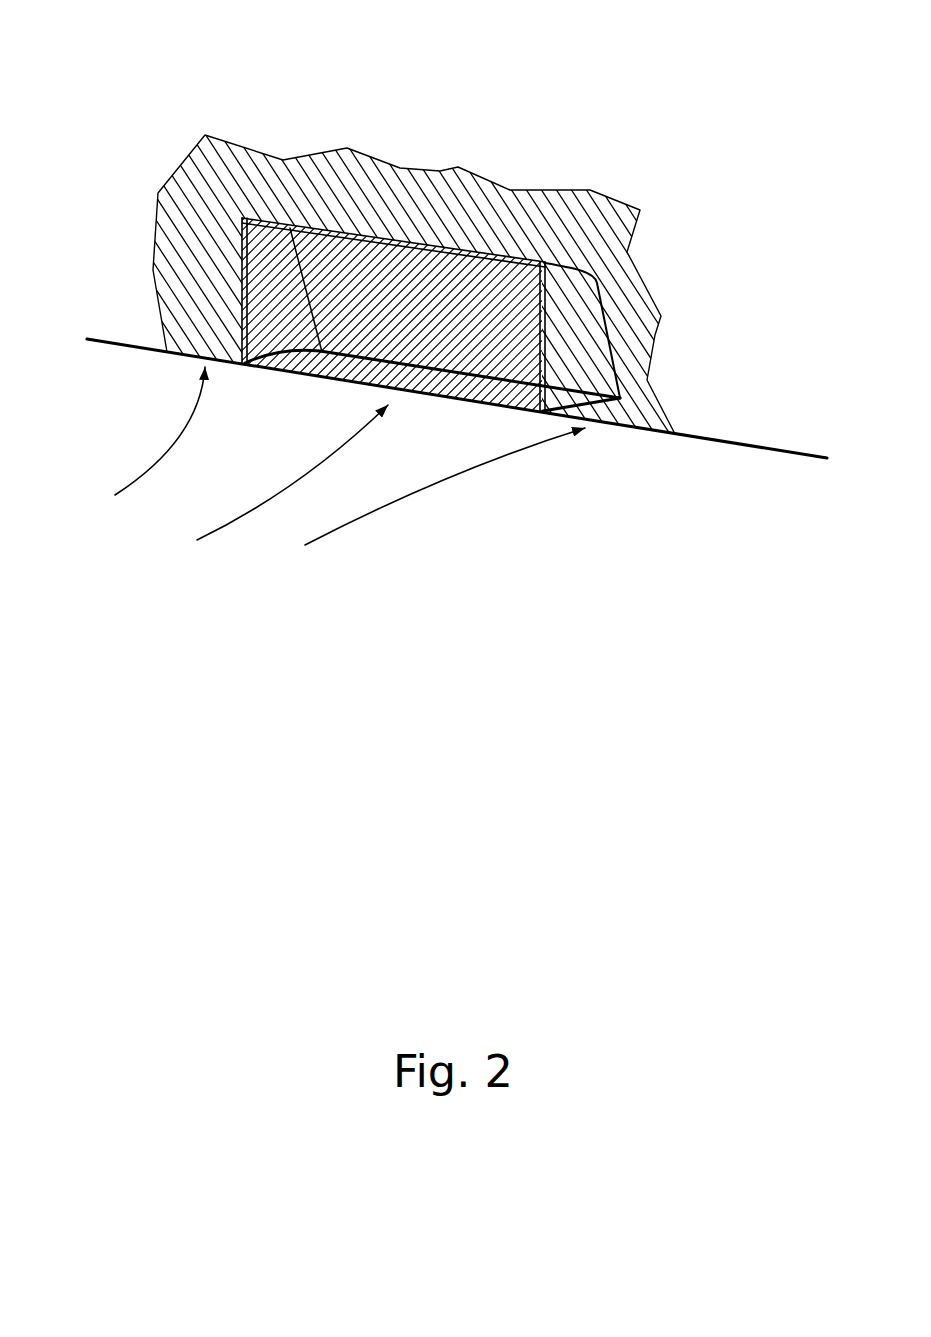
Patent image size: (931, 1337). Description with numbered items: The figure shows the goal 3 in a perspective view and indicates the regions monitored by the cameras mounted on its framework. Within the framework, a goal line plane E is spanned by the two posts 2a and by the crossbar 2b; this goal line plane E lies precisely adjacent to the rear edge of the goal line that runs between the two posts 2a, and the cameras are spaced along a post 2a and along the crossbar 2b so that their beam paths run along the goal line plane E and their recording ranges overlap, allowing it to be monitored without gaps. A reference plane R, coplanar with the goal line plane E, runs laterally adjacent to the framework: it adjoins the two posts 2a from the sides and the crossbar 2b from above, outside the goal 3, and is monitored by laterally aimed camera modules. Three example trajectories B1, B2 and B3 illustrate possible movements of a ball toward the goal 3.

The goal 3 is at (439, 213).
The posts 2a is at (240, 273).
The crossbar 2b is at (435, 243).
The reference plane R is at (583, 215).
The goal line plane E is at (417, 386).
The trajectory B1 is at (292, 472).
The trajectory B2 is at (445, 486).
The trajectory B3 is at (160, 431).